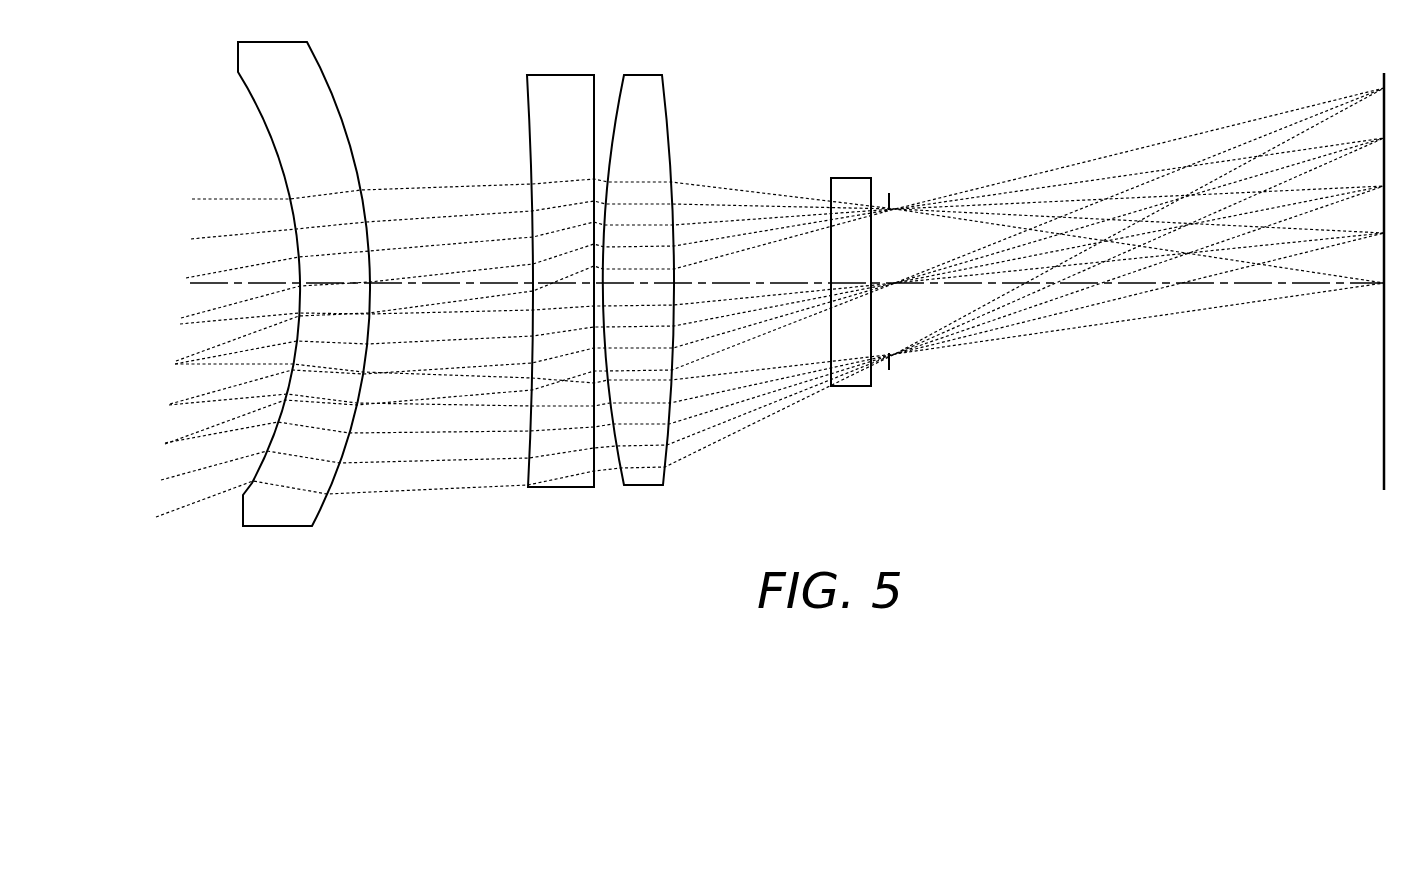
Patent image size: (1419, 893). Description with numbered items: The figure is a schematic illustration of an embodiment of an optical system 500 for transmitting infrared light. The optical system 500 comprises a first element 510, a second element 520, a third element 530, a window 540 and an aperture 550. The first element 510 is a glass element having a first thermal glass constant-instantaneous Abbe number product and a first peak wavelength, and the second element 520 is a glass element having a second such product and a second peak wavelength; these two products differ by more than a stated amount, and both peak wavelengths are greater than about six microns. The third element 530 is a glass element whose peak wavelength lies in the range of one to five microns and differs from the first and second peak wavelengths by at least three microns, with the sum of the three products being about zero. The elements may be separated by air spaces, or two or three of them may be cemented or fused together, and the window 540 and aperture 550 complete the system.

The optical system 500 is at (1044, 84).
The first element 510 is at (318, 62).
The second element 520 is at (557, 75).
The third element 530 is at (663, 73).
The window 540 is at (851, 178).
The aperture 550 is at (889, 367).